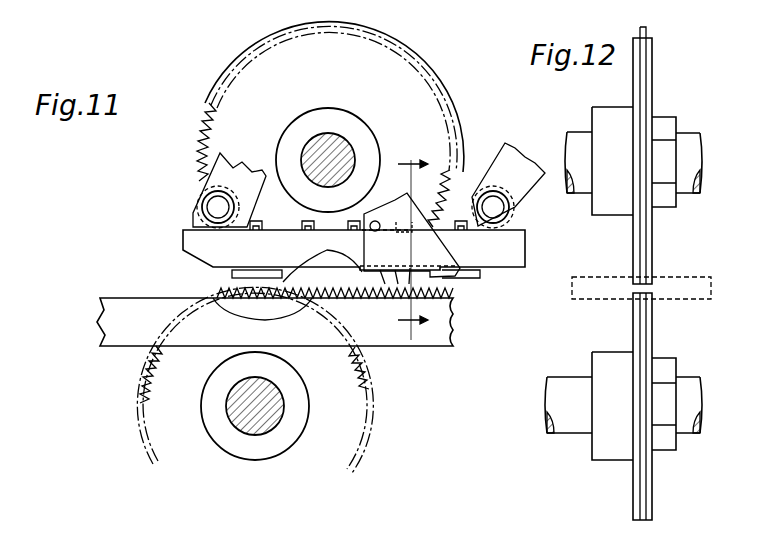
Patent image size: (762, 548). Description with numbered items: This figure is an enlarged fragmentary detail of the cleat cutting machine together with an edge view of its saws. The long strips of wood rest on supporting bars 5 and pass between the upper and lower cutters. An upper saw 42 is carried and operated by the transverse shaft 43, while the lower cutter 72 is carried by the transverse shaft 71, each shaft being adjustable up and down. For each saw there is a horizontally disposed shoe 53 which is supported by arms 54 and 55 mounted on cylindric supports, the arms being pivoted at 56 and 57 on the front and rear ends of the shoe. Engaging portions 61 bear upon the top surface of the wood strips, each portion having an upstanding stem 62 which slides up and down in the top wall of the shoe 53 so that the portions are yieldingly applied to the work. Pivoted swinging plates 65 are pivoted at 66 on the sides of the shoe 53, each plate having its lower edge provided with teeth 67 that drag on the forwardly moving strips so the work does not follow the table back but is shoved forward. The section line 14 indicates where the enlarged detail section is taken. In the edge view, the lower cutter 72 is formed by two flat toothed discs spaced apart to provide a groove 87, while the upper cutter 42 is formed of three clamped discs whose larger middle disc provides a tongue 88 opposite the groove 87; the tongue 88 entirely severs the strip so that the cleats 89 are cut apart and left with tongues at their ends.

In FIG. 11, the supporting bars 5 is at (388, 340).
In FIG. 11, the section line 14— 14 is at (413, 242).
In FIG. 11, the upper saws 42 is at (424, 100).
In FIG. 12, the upper saws 42 is at (652, 72).
In FIG. 11, the transverse shaft 43 is at (333, 148).
In FIG. 12, the transverse shaft 43 is at (583, 140).
In FIG. 11, the shoe 53 is at (210, 252).
In FIG. 11, the arm 54 is at (232, 165).
In FIG. 11, the arm 55 is at (512, 166).
In FIG. 11, the pivot 56 is at (212, 205).
In FIG. 11, the pivot 57 is at (495, 208).
In FIG. 11, the engaging portions 61 is at (245, 277).
In FIG. 11, the upstanding stem 62 is at (257, 224).
In FIG. 11, the plates 65 is at (448, 255).
In FIG. 11, the pivot 66 is at (372, 224).
In FIG. 11, the teeth 67 is at (411, 276).
In FIG. 11, the transverse shaft 71 is at (257, 432).
In FIG. 12, the transverse shaft 71 is at (568, 402).
In FIG. 11, the lower cutters 72 is at (152, 406).
In FIG. 12, the lower cutters 72 is at (636, 490).
In FIG. 12, the groove 87 is at (645, 502).
In FIG. 12, the tongue 88 is at (645, 92).
In FIG. 12, the cleats 89 is at (587, 300).